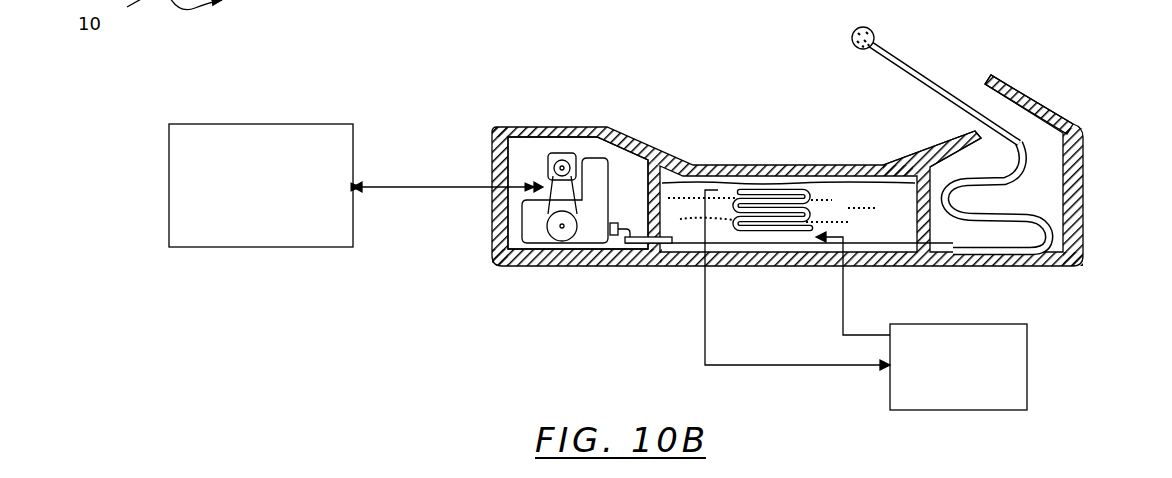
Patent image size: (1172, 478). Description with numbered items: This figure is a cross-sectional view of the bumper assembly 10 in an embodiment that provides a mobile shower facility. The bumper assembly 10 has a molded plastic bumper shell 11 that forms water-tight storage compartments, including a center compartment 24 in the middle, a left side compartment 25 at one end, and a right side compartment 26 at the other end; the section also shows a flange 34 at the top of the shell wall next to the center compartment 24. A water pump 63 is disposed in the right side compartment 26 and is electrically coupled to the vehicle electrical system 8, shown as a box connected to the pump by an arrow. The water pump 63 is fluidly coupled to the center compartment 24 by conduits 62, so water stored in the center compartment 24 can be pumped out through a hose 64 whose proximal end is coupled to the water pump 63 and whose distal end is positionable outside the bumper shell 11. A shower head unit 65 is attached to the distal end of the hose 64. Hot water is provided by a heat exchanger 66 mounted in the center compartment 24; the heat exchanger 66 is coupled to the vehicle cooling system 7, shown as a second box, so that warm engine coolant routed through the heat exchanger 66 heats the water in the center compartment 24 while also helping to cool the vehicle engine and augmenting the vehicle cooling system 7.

The vehicle cooling system 7 is at (1027, 388).
The vehicle electrical system 8 is at (168, 192).
The bumper assembly 10 is at (518, 318).
The bumper shell 11 is at (1083, 192).
The center compartment 24 is at (682, 220).
The left side compartment 25 is at (1040, 163).
The right side compartment 26 is at (537, 155).
The flange 34 is at (884, 109).
The conduits 62 is at (652, 268).
The water pump 63 is at (595, 165).
The hose 64 is at (928, 82).
The shower head unit 65 is at (873, 33).
The heat exchanger 66 is at (793, 210).